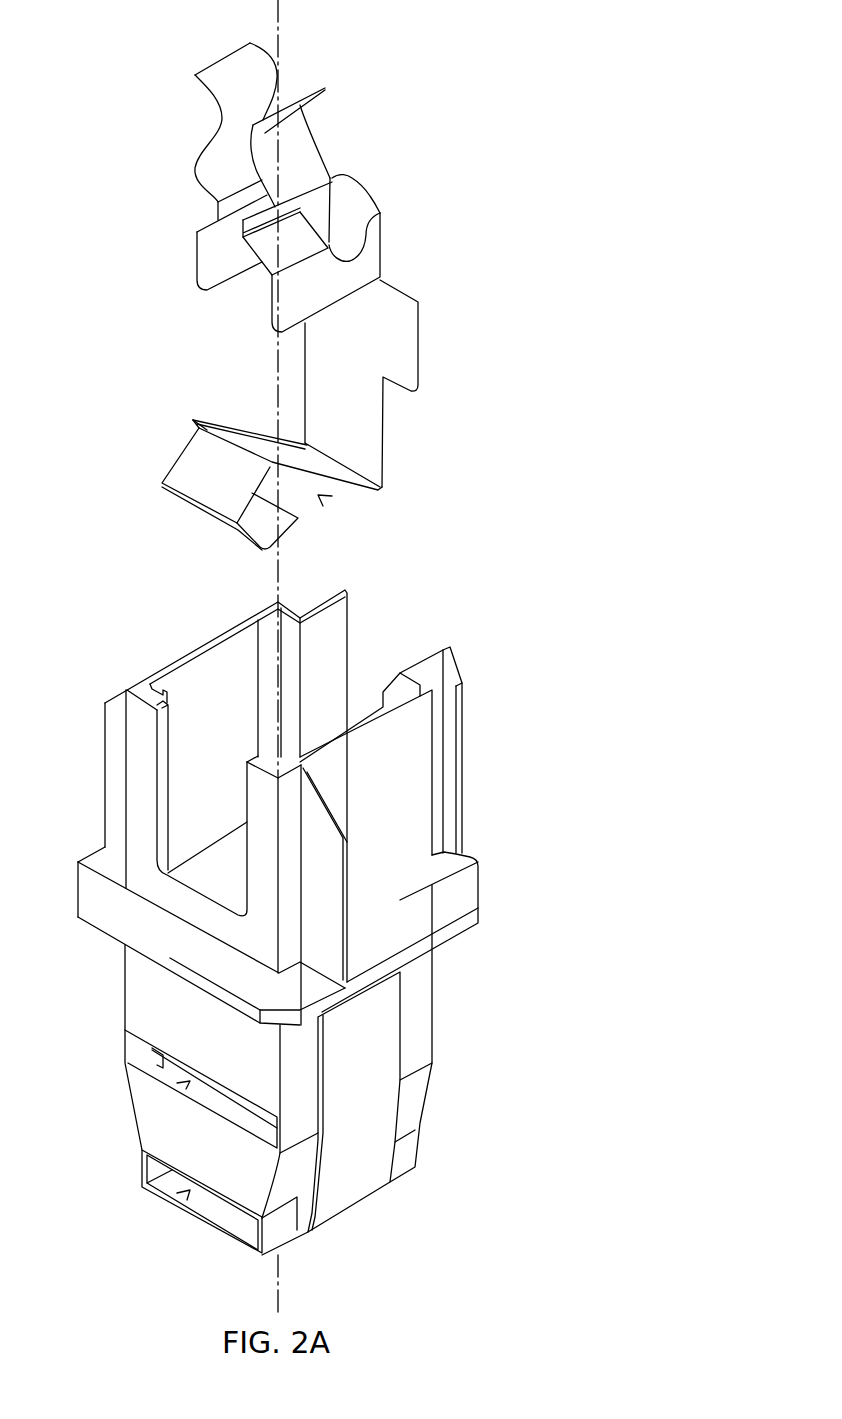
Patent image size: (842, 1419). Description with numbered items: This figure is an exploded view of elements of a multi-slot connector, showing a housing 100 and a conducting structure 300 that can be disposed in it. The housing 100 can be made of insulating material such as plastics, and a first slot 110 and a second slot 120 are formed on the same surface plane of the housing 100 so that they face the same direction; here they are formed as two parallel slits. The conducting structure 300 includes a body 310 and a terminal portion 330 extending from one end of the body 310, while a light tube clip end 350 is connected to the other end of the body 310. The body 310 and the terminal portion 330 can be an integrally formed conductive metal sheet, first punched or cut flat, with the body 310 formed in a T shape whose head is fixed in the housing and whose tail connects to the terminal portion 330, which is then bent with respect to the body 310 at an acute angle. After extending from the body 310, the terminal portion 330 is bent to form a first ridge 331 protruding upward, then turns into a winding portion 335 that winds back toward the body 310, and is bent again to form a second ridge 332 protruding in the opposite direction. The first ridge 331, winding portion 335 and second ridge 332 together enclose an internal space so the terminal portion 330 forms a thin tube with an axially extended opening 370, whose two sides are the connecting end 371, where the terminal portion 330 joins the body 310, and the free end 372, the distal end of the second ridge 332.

The housing 100 is at (306, 922).
The first slot 110 is at (190, 1081).
The second slot 120 is at (190, 1190).
The conducting structure 300 is at (326, 312).
The body 310 is at (370, 333).
The terminal portion 330 is at (319, 420).
The first ridge 331 is at (208, 428).
The second ridge 332 is at (212, 523).
The winding portion 335 is at (183, 475).
The light tube clip end 350 is at (292, 152).
The opening 370 is at (320, 497).
The connecting end 371 is at (380, 490).
The free end 372 is at (293, 514).